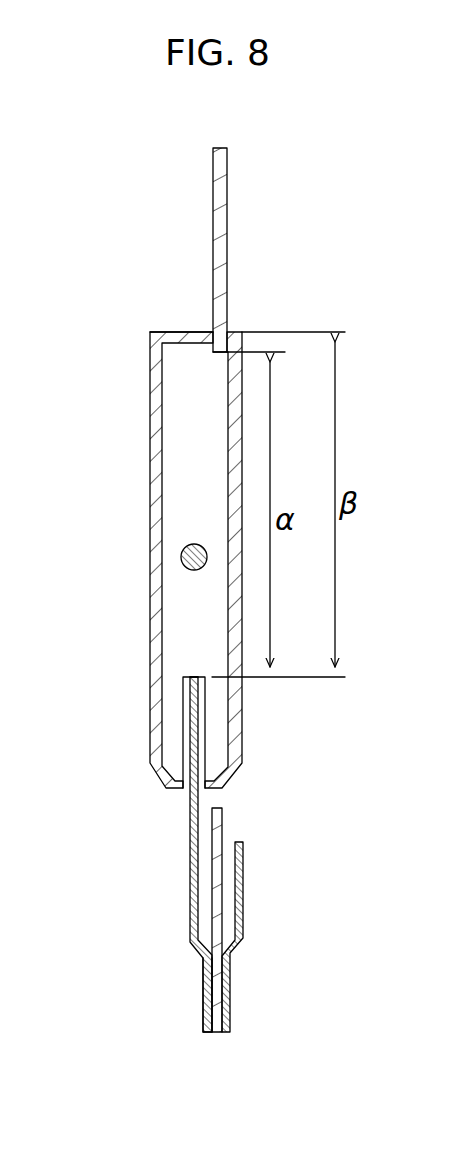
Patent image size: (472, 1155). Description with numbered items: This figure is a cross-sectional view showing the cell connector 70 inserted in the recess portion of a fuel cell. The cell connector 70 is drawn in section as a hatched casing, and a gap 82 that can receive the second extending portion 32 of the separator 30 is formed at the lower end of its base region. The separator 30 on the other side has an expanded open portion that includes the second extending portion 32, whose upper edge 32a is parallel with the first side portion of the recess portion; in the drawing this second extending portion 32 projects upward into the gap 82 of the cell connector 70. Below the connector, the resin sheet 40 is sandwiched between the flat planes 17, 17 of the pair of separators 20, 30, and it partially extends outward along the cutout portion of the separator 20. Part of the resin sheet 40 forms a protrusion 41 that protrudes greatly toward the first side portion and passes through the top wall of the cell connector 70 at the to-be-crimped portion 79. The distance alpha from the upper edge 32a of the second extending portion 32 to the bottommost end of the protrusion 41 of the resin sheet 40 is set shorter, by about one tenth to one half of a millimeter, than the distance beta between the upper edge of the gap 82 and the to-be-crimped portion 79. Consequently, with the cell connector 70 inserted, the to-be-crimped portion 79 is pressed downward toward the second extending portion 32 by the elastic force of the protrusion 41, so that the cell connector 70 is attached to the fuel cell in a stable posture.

The cell connector 70 is at (170, 527).
The to-be-crimped portion 79 is at (148, 331).
The gap 82 is at (205, 757).
The resin sheet 40 is at (277, 590).
The protrusion 41 is at (220, 200).
The separator 30 is at (127, 830).
The second extending portion 32 is at (187, 800).
The upper edge 32a is at (190, 676).
The flat plane 17 is at (203, 1000).
The separator 20 is at (229, 998).